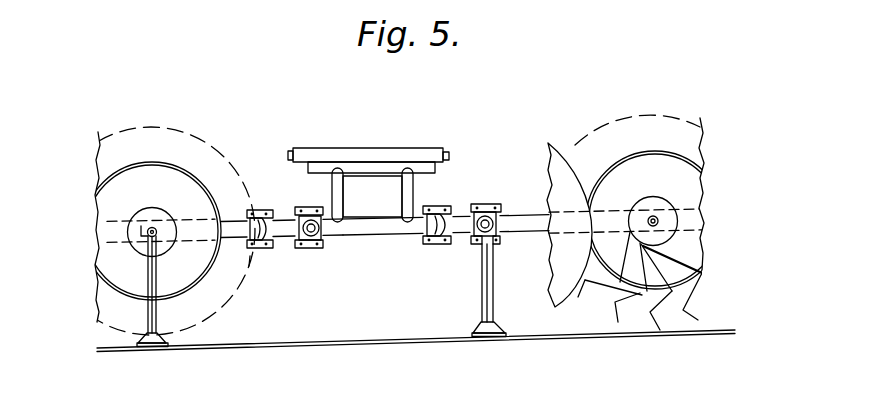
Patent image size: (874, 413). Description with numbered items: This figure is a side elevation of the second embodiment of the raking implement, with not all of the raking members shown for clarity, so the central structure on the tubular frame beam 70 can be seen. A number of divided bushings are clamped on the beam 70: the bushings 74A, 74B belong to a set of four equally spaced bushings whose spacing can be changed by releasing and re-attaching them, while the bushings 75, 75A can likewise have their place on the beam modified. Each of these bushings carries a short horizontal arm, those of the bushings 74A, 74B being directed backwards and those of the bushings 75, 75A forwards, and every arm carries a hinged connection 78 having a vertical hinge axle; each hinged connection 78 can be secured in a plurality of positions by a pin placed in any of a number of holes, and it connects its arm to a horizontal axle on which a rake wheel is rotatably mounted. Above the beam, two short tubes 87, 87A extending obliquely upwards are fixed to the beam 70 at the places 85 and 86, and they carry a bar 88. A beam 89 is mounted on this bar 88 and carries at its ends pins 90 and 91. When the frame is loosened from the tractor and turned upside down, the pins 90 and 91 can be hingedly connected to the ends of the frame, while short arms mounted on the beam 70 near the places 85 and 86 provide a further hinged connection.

The tubular frame beam 70 is at (376, 235).
The divided bushing 74A is at (319, 240).
The divided bushing 74B is at (502, 238).
The divided bushing 75 is at (262, 242).
The divided bushing 75A is at (436, 245).
The hinged connection 78 is at (305, 208).
The fixing place on the beam 85 is at (344, 212).
The fixing place on the beam 86 is at (403, 239).
The short tube 87 is at (342, 192).
The short tube 87A is at (412, 190).
The bar 88 is at (437, 170).
The beam 89 is at (378, 148).
The pin 90 is at (288, 156).
The pin 91 is at (449, 156).